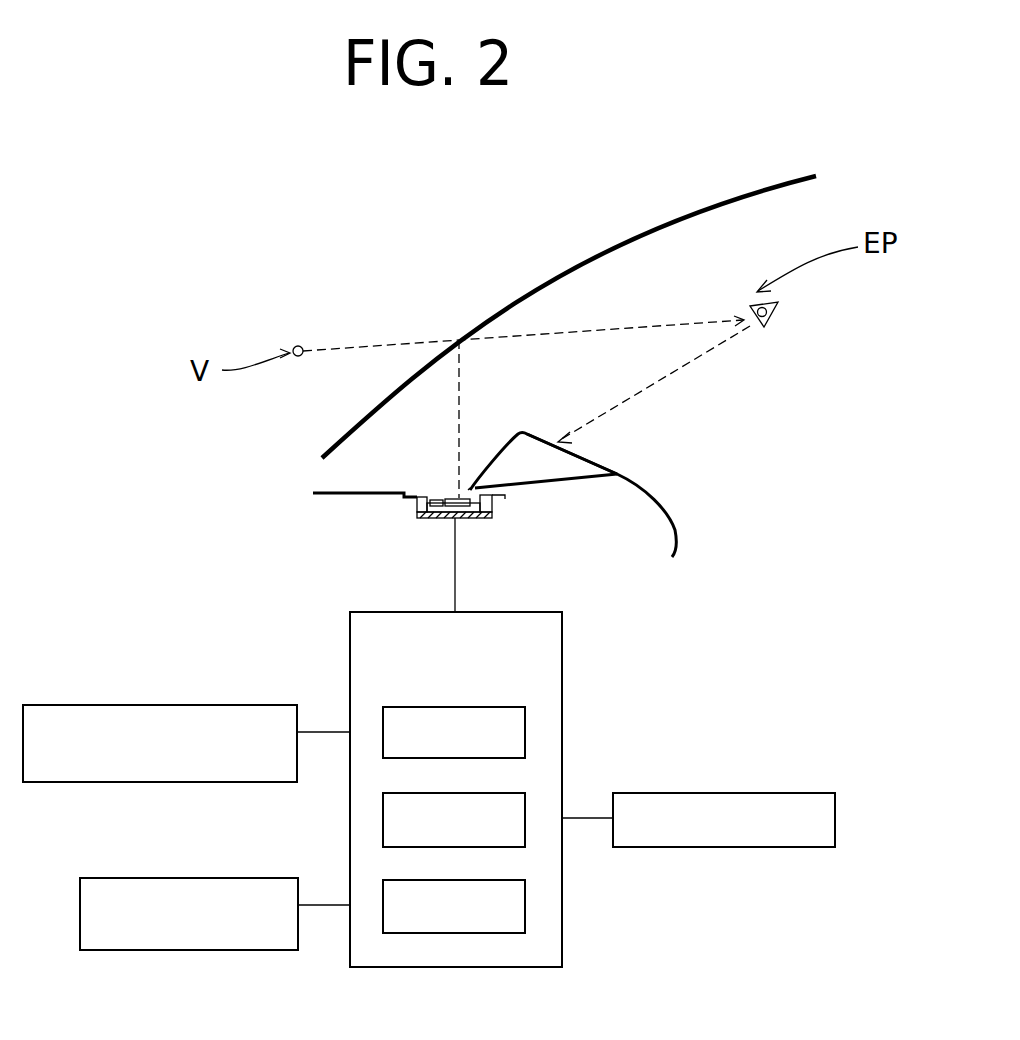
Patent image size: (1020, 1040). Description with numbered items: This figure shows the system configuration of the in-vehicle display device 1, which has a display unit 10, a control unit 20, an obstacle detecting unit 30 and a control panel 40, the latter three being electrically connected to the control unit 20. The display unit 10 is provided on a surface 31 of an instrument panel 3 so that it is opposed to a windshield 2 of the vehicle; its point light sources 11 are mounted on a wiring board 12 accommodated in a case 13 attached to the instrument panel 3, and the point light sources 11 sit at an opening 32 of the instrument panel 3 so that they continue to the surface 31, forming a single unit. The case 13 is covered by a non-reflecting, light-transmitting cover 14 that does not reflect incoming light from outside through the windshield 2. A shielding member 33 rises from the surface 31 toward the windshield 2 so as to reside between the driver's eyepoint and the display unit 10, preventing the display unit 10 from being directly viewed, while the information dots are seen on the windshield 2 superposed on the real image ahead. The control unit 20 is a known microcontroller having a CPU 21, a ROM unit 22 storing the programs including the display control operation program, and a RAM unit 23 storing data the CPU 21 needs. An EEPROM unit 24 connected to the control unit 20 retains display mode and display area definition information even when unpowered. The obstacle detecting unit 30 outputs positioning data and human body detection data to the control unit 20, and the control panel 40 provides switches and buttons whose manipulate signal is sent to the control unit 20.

The in-vehicle display device 1 is at (626, 896).
The windshield 2 is at (667, 222).
The instrument panel 3 is at (655, 518).
The display unit 10 is at (434, 493).
The point light source 11 is at (416, 465).
The wiring board 12 is at (483, 532).
The case 13 is at (505, 500).
The cover 14 is at (453, 497).
The control unit 20 is at (563, 663).
The central processing unit (CPU) 21 is at (463, 706).
The read-only memory (ROM) unit 22 is at (463, 793).
The readable/writable memory (RAM) unit 23 is at (463, 880).
The electrically erasable programmable read only memory (EEPROM) unit 24 is at (735, 793).
The obstacle detecting unit 30 is at (200, 705).
The surface of instrument panel 31 is at (345, 493).
The opening of instrument panel 32 is at (466, 490).
The shielding member 33 is at (567, 453).
The control panel 40 is at (200, 878).